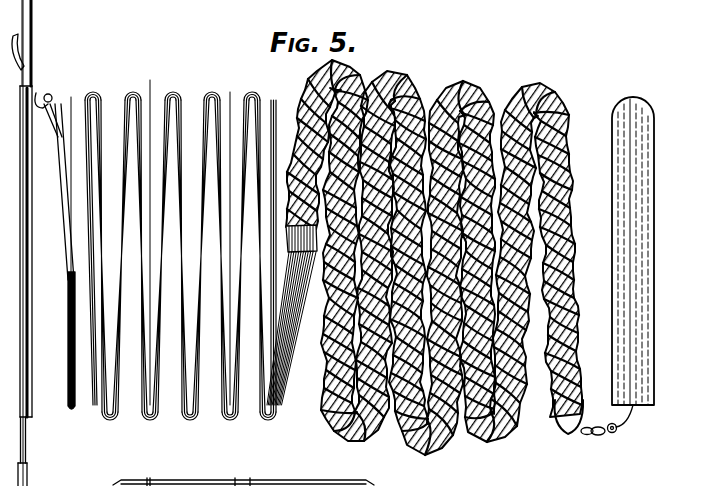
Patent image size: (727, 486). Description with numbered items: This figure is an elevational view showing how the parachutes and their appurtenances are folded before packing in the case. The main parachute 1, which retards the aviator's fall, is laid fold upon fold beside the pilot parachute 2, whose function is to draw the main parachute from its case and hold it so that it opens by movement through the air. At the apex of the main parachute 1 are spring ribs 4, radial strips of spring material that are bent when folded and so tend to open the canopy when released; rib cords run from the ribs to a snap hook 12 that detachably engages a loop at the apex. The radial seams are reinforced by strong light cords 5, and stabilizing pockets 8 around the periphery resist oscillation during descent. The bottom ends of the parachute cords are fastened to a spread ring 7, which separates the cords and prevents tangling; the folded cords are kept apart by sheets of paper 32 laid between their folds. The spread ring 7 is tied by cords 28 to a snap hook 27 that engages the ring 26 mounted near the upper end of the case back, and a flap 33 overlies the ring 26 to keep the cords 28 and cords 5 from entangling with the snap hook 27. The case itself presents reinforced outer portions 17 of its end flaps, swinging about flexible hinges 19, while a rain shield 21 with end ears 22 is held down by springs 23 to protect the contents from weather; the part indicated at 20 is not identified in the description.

The main parachute 1 is at (405, 104).
The pilot parachute 2 is at (641, 183).
The spring ribs 4 is at (549, 408).
The cords 5 is at (31, 34).
The spread ring 7 is at (70, 412).
The stabilizing pockets 8 is at (293, 315).
The snap hook 12 is at (607, 434).
The outer portions of end flaps 17 is at (27, 482).
The hinges 19 is at (25, 447).
The hook 20 is at (27, 62).
The rain shield 21 is at (27, 50).
The ears 22 is at (374, 481).
The springs 23 is at (149, 481).
The ring 26 is at (45, 97).
The snap hook 27 is at (52, 102).
The cords 28 is at (58, 215).
The sheets of paper 32 is at (152, 92).
The flap 33 is at (47, 130).